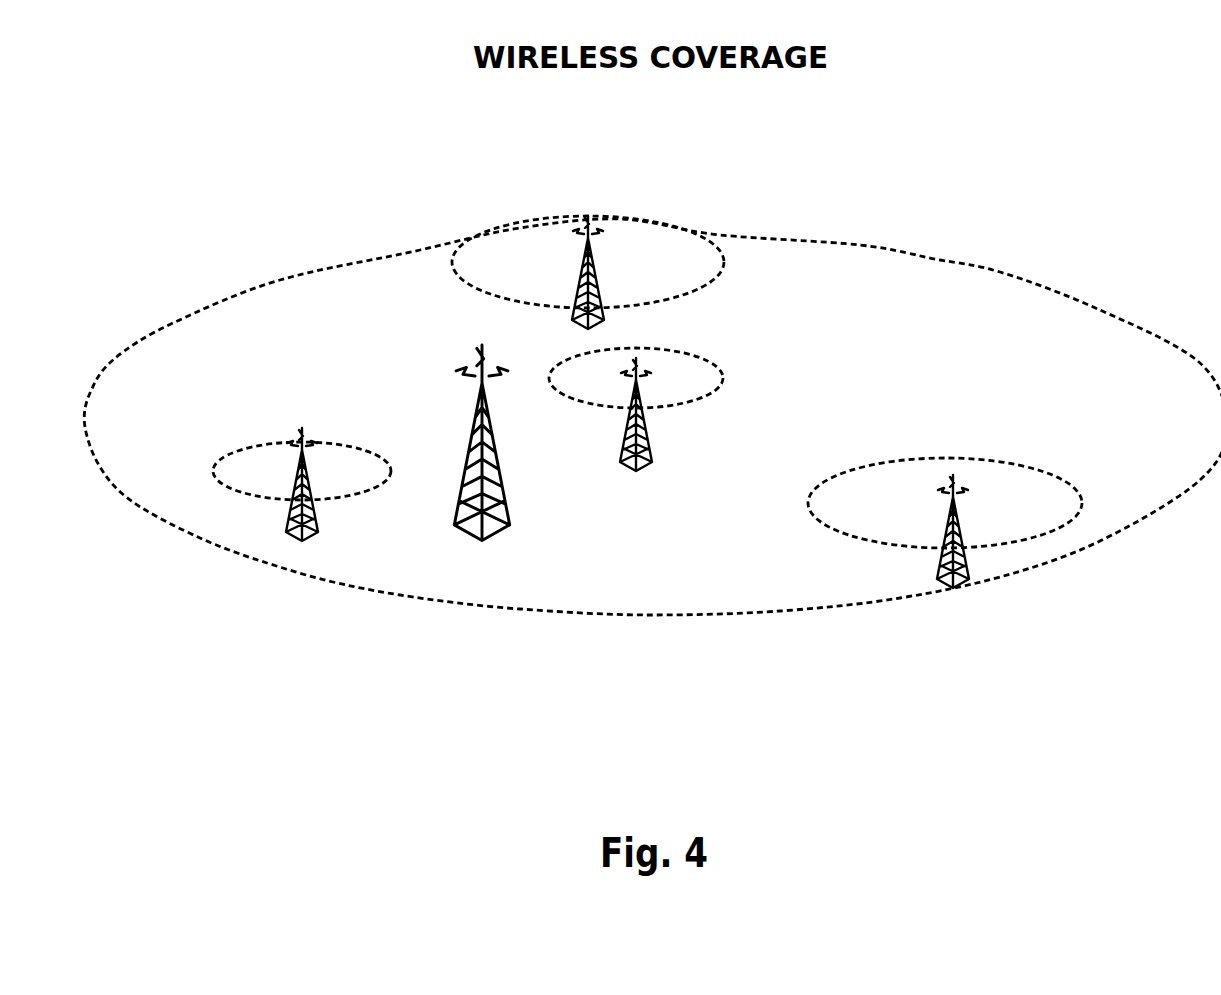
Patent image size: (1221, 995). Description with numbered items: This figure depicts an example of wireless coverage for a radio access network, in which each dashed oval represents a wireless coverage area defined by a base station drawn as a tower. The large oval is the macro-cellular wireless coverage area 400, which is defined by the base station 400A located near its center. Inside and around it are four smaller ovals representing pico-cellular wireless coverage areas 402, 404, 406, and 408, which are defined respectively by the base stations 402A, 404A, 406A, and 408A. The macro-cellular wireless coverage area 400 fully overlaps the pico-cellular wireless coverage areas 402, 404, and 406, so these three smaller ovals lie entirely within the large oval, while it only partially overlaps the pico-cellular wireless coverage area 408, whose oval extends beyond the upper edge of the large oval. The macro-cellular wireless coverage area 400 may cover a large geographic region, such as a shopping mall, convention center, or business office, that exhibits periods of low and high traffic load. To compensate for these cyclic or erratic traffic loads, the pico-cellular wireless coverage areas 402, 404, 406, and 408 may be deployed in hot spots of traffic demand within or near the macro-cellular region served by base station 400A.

The wireless coverage area 400 is at (178, 321).
The base station 400A is at (505, 488).
The wireless coverage area 402 is at (244, 451).
The base station 402A is at (313, 497).
The wireless coverage area 404 is at (549, 378).
The base station 404A is at (649, 418).
The wireless coverage area 406 is at (850, 473).
The base station 406A is at (966, 534).
The wireless coverage area 408 is at (483, 237).
The base station 408A is at (600, 282).